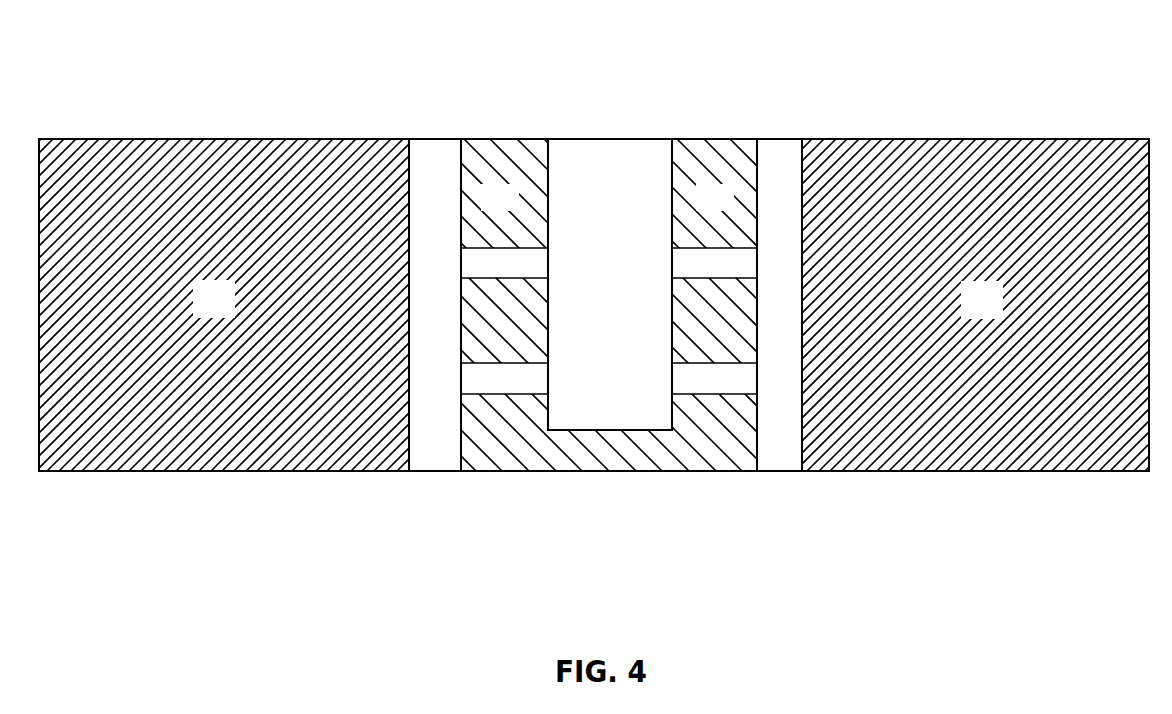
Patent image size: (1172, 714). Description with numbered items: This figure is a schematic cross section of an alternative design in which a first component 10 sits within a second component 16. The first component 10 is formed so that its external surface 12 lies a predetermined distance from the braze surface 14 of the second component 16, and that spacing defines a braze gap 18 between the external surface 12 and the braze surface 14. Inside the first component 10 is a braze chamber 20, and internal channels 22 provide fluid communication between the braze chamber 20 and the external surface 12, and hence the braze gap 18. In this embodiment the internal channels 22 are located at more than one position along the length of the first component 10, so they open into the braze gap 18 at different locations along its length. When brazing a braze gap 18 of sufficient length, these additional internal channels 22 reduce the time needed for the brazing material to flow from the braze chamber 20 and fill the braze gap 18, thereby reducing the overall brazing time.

The first component 10 is at (486, 208).
The external surface 12 is at (459, 436).
The braze surface 14 is at (407, 436).
The second component 16 is at (228, 315).
The braze gap 18 is at (438, 182).
The braze chamber 20 is at (596, 305).
The internal channel 22 is at (478, 378).